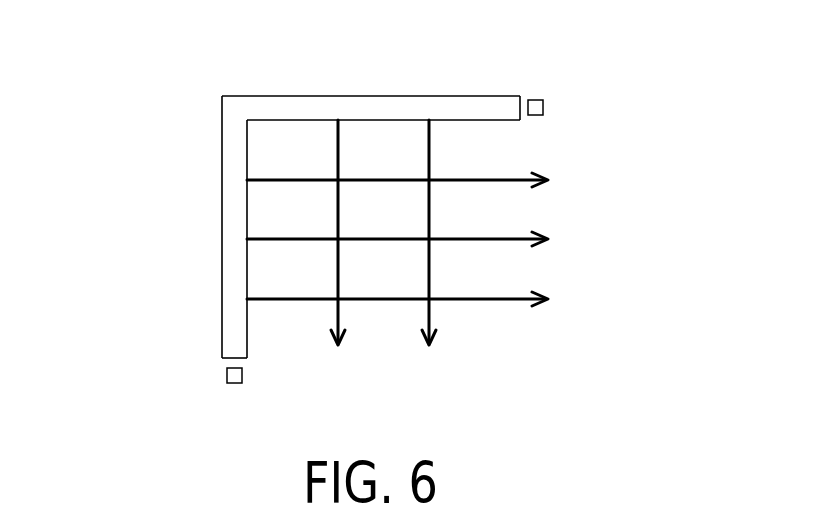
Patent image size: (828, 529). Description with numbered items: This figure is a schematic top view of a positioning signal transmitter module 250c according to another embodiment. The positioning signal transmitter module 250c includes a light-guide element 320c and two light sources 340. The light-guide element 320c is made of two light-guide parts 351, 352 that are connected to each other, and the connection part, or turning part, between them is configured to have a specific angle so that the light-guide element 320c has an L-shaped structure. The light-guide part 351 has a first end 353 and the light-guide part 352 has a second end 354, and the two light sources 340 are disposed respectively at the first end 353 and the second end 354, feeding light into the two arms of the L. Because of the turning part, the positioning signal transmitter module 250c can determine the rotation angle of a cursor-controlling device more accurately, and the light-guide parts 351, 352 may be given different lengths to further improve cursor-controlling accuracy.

The light-guide element 320c is at (128, 25).
The light-guide part 351 is at (283, 108).
The light-guide part 352 is at (232, 145).
The first end 353 is at (530, 98).
The second end 354 is at (218, 364).
The light source 340 is at (543, 107).
The positioning signal transmitter module 250c is at (702, 383).